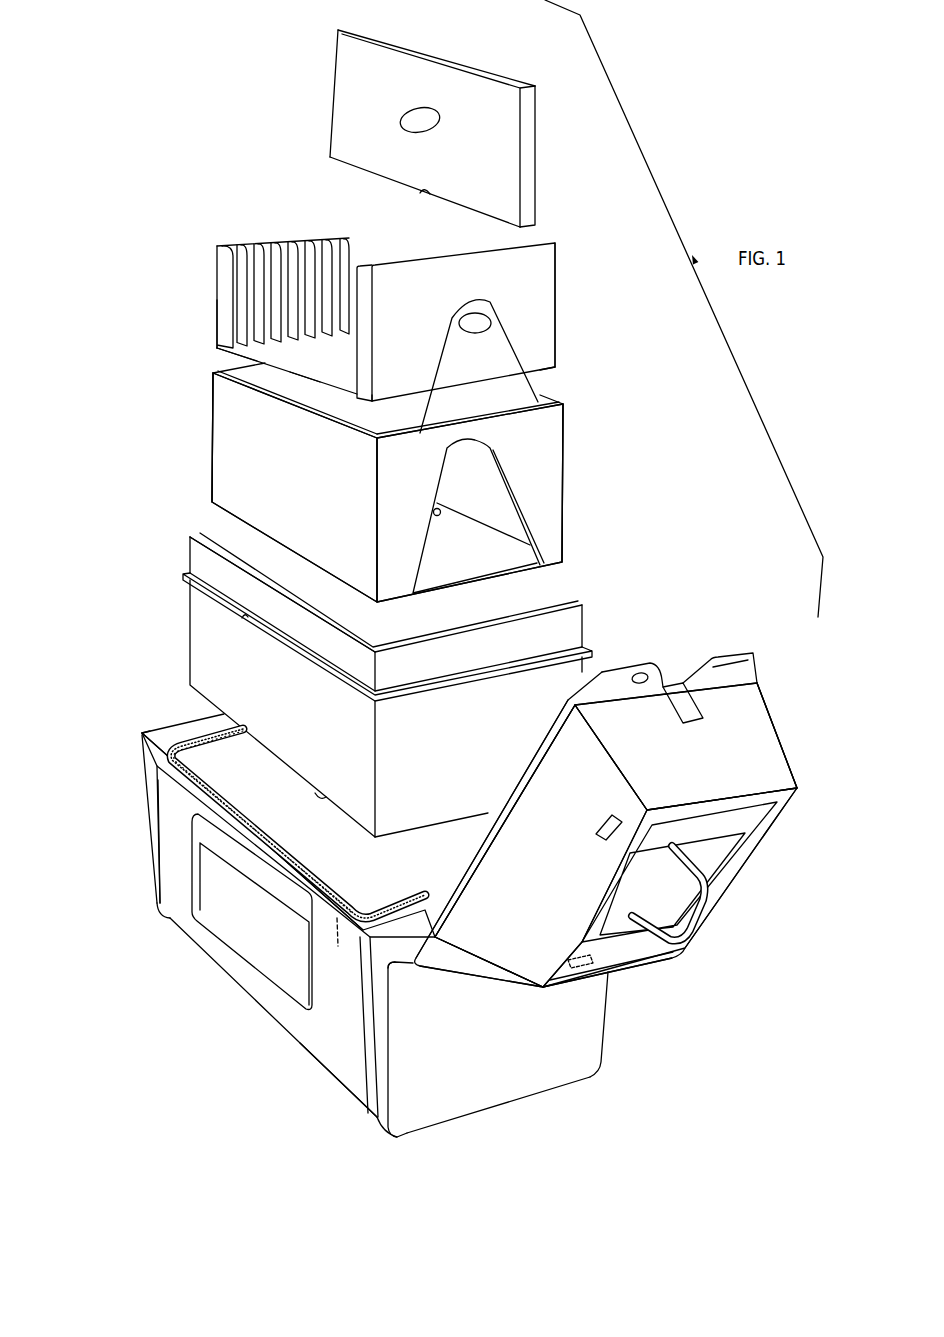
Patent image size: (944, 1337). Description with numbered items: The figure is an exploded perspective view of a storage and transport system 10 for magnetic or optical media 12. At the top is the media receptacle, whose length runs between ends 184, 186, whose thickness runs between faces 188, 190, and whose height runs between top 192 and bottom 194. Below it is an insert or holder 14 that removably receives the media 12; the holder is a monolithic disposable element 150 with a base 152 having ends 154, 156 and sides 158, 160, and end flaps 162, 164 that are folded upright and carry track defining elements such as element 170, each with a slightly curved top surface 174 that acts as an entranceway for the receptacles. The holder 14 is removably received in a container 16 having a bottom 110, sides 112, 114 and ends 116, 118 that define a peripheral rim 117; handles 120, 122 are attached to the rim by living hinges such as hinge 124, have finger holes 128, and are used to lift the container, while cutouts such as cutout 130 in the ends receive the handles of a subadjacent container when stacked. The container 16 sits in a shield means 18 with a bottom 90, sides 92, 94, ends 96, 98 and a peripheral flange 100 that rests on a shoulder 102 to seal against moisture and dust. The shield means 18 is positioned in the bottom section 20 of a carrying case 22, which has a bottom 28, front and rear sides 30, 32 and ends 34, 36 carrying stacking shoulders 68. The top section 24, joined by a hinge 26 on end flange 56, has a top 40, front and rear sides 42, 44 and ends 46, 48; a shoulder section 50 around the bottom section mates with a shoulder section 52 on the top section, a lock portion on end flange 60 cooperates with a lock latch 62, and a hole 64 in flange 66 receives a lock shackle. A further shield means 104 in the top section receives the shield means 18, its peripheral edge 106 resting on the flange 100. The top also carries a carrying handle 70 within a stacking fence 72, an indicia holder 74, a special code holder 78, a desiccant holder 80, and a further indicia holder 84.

The storage and transport system 10 is at (126, 380).
The magnetic or optical media 12 is at (330, 110).
The insert or holder 14 is at (188, 276).
The container 16 is at (562, 466).
The shield means 18 is at (176, 650).
The bottom section 20 is at (500, 1088).
The carrying case 22 is at (126, 907).
The top section 24 is at (528, 965).
The hinge 26 is at (417, 975).
The bottom 28 is at (287, 1030).
The front side 30 is at (330, 1058).
The rear side 32 is at (606, 1046).
The end 34 is at (407, 1135).
The end 36 is at (152, 830).
The top 40 is at (638, 955).
The front side 42 is at (476, 927).
The rear side 44 is at (795, 772).
The end 46 is at (757, 713).
The end 48 is at (497, 975).
The shoulder section 50 is at (195, 795).
The shoulder section 52 is at (502, 806).
The end flange 56 is at (363, 955).
The end flange 60 is at (141, 736).
The lock latch 62 is at (688, 680).
The hole 64 is at (645, 665).
The flange 66 is at (745, 652).
The stacking shoulders 68 is at (171, 920).
The carrying handle 70 is at (682, 928).
The stacking fence 72 is at (733, 847).
The holder 74 is at (618, 907).
The special holder 78 is at (607, 826).
The desiccant holder 80 is at (600, 970).
The holder 84 is at (248, 942).
The bottom 90 is at (320, 790).
The side 92 is at (273, 713).
The side 94 is at (585, 607).
The end 96 is at (190, 541).
The end 98 is at (446, 743).
The peripheral flange 100 is at (245, 616).
The shoulder 102 is at (333, 941).
The further shield means 104 is at (538, 742).
The peripheral edge 106 is at (452, 855).
The bottom 110 is at (448, 556).
The side 112 is at (251, 492).
The side 114 is at (565, 545).
The end 116 is at (210, 432).
The peripheral rim 117 is at (288, 394).
The end 118 is at (516, 460).
The handle 120 is at (512, 357).
The handle 122 is at (247, 358).
The living hinge 124 is at (447, 422).
The finger holes 128 is at (477, 312).
The cutout 130 is at (434, 511).
The monolithic disposable element 150 is at (560, 258).
The base 152 is at (306, 360).
The end 154 is at (215, 347).
The end 156 is at (376, 395).
The side 158 is at (309, 380).
The side 160 is at (556, 370).
The end flap 162 is at (213, 252).
The end flap 164 is at (552, 298).
The track defining element 170 is at (350, 252).
The curved top surface 174 is at (287, 243).
The end 184 is at (336, 55).
The end 186 is at (533, 109).
The face 188 is at (402, 58).
The face 190 is at (531, 82).
The top 192 is at (458, 63).
The bottom 194 is at (424, 192).